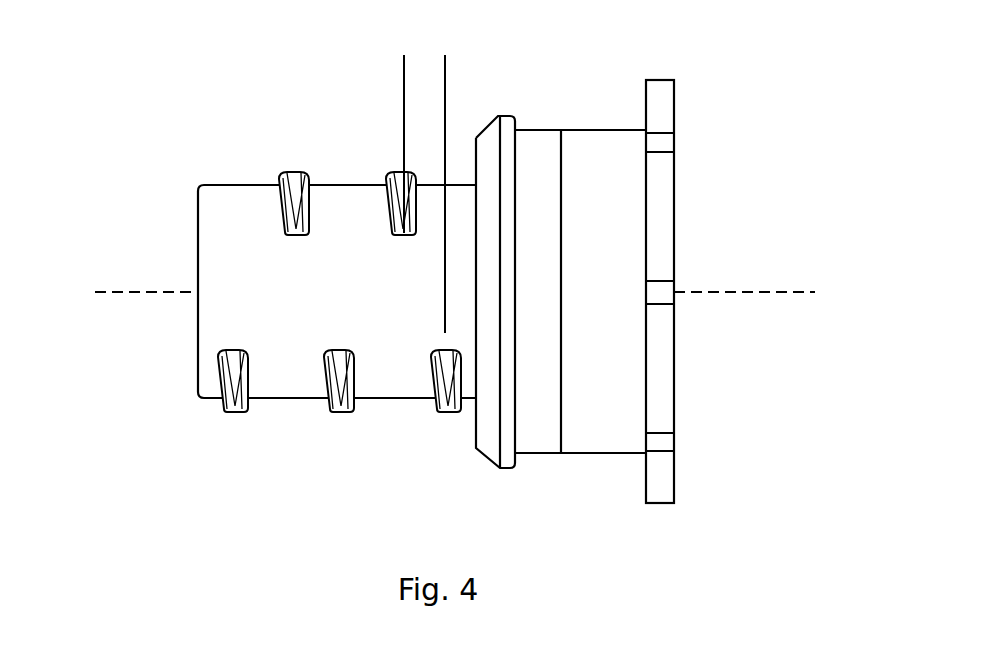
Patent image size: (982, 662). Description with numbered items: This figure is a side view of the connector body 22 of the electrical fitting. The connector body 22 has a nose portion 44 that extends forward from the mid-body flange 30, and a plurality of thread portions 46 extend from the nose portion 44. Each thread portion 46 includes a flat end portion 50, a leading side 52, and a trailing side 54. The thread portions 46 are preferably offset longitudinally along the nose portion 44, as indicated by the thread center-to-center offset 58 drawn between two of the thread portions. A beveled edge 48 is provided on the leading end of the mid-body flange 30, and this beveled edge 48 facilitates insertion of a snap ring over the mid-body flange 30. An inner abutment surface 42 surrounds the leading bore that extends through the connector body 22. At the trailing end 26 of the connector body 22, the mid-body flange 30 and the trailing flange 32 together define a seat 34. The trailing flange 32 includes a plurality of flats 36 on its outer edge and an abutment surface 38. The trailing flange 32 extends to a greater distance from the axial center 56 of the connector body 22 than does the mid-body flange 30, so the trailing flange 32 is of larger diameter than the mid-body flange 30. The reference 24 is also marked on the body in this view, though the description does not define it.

The connector body 22 is at (170, 121).
The housing body 24 is at (198, 248).
The trailing end 26 is at (674, 200).
The mid-body flange 30 is at (505, 470).
The trailing flange 32 is at (662, 79).
The seat 34 is at (580, 294).
The flats 36 is at (660, 380).
The abutment surface 38 is at (636, 487).
The inner abutment surface 42 is at (466, 431).
The nose portion 44 is at (290, 398).
The thread portions 46 is at (343, 412).
The beveled edge 48 is at (490, 460).
The flat end portions 50 is at (295, 235).
The leading sides 52 is at (285, 172).
The trailing sides 54 is at (300, 172).
The axial center 56 is at (765, 292).
The thread center-to-center offset 58 is at (350, 92).